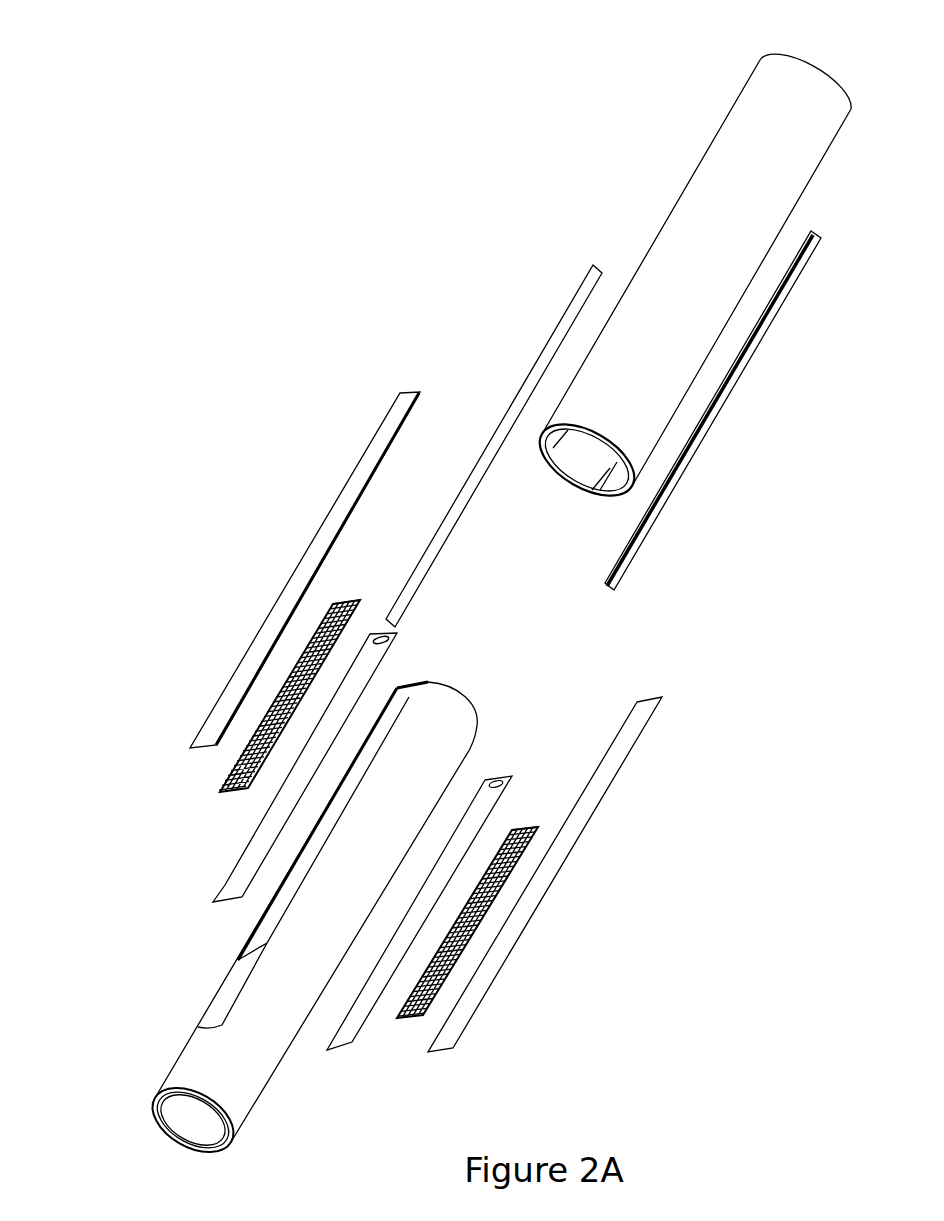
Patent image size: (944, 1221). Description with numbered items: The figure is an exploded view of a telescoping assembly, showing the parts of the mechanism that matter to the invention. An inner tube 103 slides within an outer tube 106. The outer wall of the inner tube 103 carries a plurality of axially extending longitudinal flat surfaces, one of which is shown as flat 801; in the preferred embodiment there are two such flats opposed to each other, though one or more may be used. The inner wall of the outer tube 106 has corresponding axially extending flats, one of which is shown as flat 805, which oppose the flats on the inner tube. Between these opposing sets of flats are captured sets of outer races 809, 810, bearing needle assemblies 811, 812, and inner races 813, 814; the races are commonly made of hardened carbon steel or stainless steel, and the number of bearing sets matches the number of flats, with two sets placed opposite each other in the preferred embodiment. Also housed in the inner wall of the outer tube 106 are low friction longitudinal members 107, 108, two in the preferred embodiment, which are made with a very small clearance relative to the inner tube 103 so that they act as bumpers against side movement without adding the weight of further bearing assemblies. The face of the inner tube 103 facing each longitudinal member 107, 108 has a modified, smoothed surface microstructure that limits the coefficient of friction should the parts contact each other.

The inner tube 103 is at (435, 761).
The outer tube 106 is at (668, 207).
The low friction longitudinal member 107 is at (518, 390).
The low friction longitudinal member 108 is at (712, 430).
The flat 801 is at (400, 698).
The flat 805 is at (613, 485).
The outer race 809 is at (334, 497).
The outer race 810 is at (553, 895).
The bearing needle assembly 811 is at (228, 782).
The bearing needle assembly 812 is at (412, 1019).
The inner race 813 is at (222, 885).
The inner race 814 is at (497, 808).